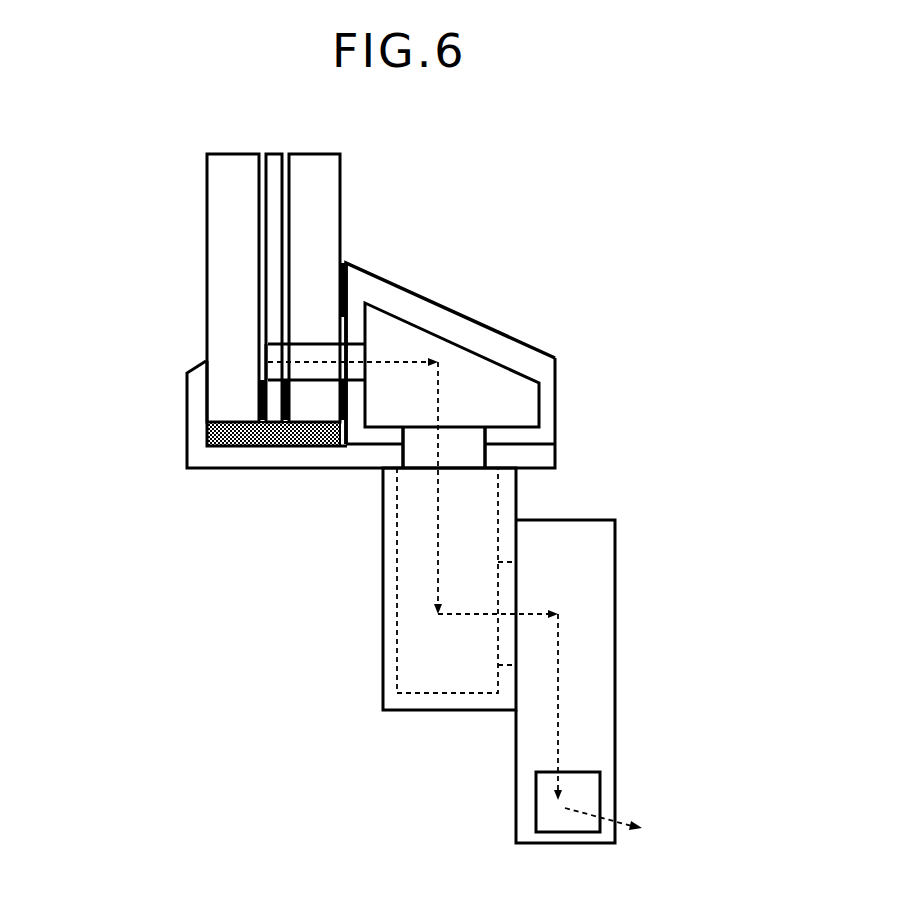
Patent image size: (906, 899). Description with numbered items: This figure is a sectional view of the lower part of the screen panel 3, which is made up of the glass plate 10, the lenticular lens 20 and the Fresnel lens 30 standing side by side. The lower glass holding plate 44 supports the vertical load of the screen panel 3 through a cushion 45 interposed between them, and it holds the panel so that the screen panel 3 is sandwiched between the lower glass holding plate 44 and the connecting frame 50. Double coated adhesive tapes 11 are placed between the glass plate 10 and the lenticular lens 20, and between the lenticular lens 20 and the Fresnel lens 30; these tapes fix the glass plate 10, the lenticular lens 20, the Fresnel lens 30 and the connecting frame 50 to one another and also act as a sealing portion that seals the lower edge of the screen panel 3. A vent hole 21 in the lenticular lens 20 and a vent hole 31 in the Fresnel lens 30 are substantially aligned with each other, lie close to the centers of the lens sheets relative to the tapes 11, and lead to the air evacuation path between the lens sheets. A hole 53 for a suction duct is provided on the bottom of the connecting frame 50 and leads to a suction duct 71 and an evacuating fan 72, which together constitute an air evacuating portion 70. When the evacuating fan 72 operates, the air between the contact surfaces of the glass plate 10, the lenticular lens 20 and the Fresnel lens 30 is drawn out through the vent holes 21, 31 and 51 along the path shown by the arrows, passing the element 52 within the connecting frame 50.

The screen panel 3 is at (130, 137).
The glass plate 10 is at (243, 183).
The double coated adhesive tapes 11 is at (338, 297).
The lenticular lens 20 is at (273, 210).
The vent hole 21 is at (265, 352).
The Fresnel lens 30 is at (310, 230).
The vent hole 31 is at (303, 355).
The lower glass holding plate 44 is at (187, 416).
The cushion 45 is at (237, 446).
The connecting frame 50 is at (475, 320).
The vent hole 51 is at (358, 353).
The prism 52 is at (485, 385).
The hole for a suction duct 53 is at (475, 435).
The air evacuating portion 70 is at (436, 720).
The suction duct 71 is at (383, 623).
The evacuating fan 72 is at (593, 635).